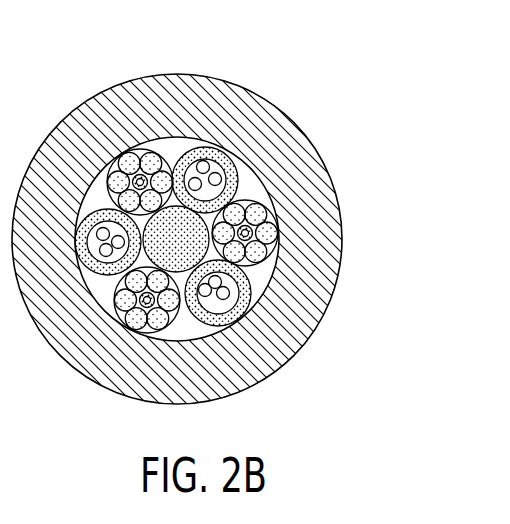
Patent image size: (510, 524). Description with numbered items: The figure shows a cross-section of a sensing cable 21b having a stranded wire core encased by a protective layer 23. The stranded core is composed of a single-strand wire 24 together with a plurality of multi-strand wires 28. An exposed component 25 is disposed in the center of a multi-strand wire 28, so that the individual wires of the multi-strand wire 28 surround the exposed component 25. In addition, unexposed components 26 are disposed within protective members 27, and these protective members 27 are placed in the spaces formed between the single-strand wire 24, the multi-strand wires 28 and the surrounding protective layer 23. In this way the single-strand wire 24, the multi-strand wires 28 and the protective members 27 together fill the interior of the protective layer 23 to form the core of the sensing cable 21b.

The sensing cable 21b is at (290, 55).
The protective layer 23 is at (152, 93).
The single-strand wire 24 is at (173, 207).
The exposed component 25 is at (312, 157).
The unexposed component 26 is at (224, 298).
The protective member 27 is at (212, 330).
The multi-strand wire 28 is at (246, 238).